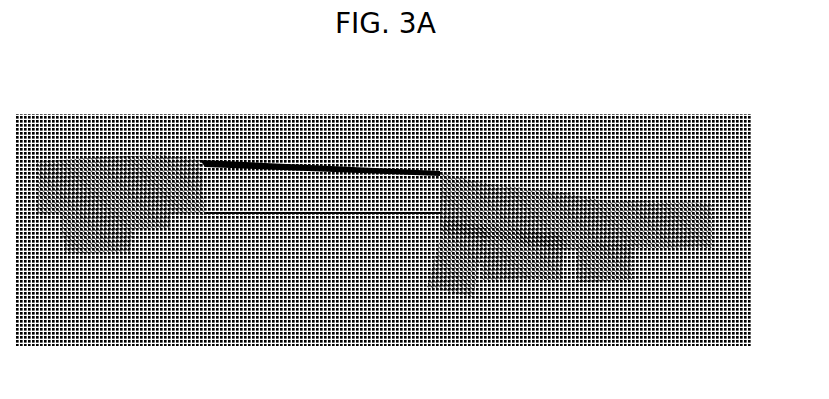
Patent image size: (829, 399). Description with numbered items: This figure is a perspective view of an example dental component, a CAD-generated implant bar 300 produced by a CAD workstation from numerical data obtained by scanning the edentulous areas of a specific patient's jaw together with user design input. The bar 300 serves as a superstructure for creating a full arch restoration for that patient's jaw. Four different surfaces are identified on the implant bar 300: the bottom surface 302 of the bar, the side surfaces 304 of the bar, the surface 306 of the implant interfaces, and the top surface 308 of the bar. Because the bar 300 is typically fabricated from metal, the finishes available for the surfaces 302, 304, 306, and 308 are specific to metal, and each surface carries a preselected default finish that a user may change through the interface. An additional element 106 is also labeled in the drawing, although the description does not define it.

The implant bar 300 is at (350, 145).
The bottom surface 302 is at (277, 213).
The side surfaces 304 is at (480, 270).
The surface of the implant interfaces 306 is at (508, 192).
The top surface 308 is at (445, 176).
The conductive contact 106 is at (587, 207).